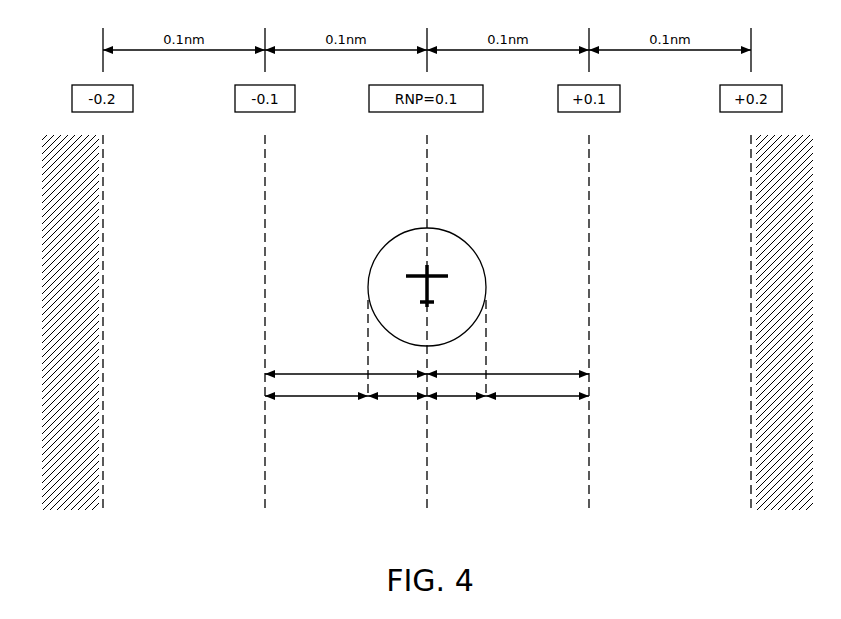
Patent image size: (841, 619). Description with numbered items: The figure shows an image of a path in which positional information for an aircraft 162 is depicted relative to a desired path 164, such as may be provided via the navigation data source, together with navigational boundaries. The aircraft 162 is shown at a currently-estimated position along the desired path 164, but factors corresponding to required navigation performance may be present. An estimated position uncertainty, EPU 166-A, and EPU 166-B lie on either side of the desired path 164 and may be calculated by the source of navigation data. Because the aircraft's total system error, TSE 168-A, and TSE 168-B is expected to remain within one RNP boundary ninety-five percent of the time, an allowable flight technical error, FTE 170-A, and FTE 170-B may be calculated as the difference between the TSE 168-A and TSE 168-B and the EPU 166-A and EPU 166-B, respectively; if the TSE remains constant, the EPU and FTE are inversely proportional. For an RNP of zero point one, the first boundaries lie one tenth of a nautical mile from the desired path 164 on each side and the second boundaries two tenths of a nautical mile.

The aircraft 162 is at (439, 270).
The desired path 164 is at (427, 155).
The estimated position uncertainty (EPU) 166-A is at (403, 399).
The estimated position uncertainty (EPU) 166-B is at (450, 399).
The total system error (TSE) 168-A is at (329, 372).
The total system error (TSE) 168-B is at (529, 372).
The allowable flight technical error (FTE) 170-A is at (322, 399).
The allowable flight technical error (FTE) 170-B is at (531, 399).